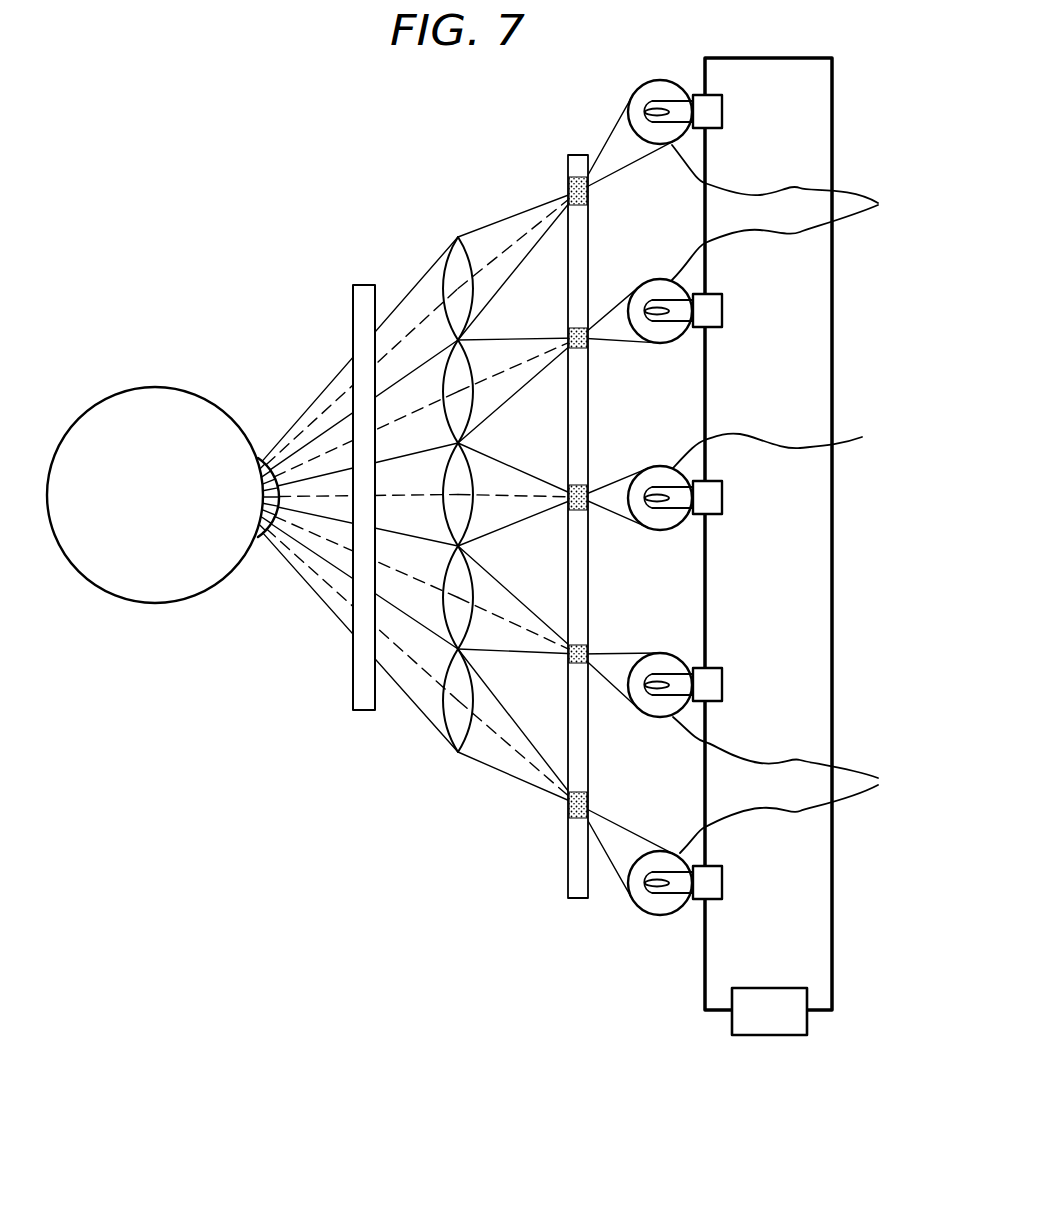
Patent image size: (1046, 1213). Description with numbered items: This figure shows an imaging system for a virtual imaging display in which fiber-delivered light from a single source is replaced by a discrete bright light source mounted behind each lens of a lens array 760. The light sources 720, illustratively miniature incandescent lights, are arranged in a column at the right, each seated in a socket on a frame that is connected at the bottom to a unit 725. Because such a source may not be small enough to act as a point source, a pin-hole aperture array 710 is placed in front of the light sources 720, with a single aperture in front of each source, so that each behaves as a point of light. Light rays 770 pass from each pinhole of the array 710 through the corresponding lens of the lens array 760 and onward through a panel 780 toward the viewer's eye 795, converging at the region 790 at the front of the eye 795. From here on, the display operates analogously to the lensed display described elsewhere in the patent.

The pin-hole aperture array 710 is at (570, 157).
The light sources 720 is at (776, 497).
The controller / power supply 725 is at (768, 546).
The lens array 760 is at (456, 224).
The light rays 770 is at (504, 247).
The display panel / spatial light modulator 780 is at (367, 285).
The cornea / pupil of the eye 790 is at (294, 447).
The eye of viewer 795 is at (110, 594).